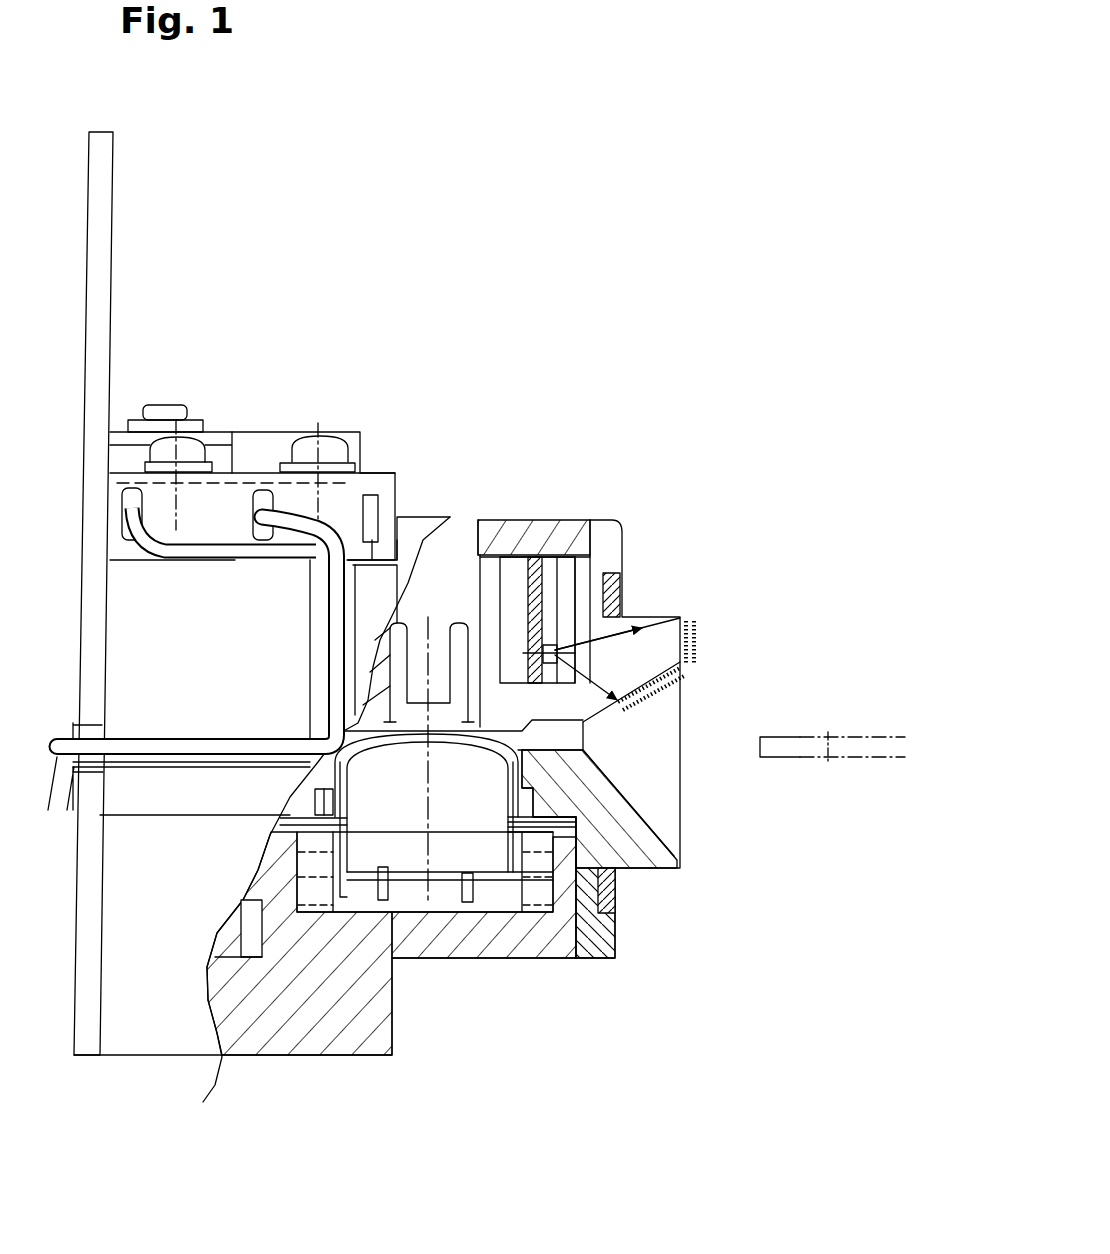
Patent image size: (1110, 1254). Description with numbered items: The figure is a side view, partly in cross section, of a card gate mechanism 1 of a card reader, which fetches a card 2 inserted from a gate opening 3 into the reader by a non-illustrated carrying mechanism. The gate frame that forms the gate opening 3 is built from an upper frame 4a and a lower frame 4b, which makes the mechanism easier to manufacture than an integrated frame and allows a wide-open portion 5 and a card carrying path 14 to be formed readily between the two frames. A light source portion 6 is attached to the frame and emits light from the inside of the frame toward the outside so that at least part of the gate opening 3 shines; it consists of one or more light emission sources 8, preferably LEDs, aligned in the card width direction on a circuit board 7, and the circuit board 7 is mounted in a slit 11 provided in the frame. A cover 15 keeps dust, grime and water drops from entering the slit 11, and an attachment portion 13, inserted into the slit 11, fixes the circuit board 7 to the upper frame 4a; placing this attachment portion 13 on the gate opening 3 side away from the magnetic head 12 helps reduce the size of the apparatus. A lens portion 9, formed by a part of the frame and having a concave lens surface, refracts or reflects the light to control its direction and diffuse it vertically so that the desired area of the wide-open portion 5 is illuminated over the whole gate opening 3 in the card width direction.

The card gate mechanism 1 is at (52, 202).
The card 2 is at (828, 732).
The gate opening 3 is at (602, 735).
The upper frame 4a is at (665, 640).
The lower frame 4b is at (653, 856).
The wide-open portion 5 is at (722, 636).
The light source portion 6 is at (603, 454).
The circuit board 7 is at (540, 643).
The light emission source 8 is at (547, 625).
The lens portion 9 is at (583, 633).
The slit 11 is at (515, 627).
The magnetic head 12 is at (453, 848).
The attachment portion 13 is at (472, 565).
The card carrying path 14 is at (567, 741).
The cover 15 is at (587, 528).